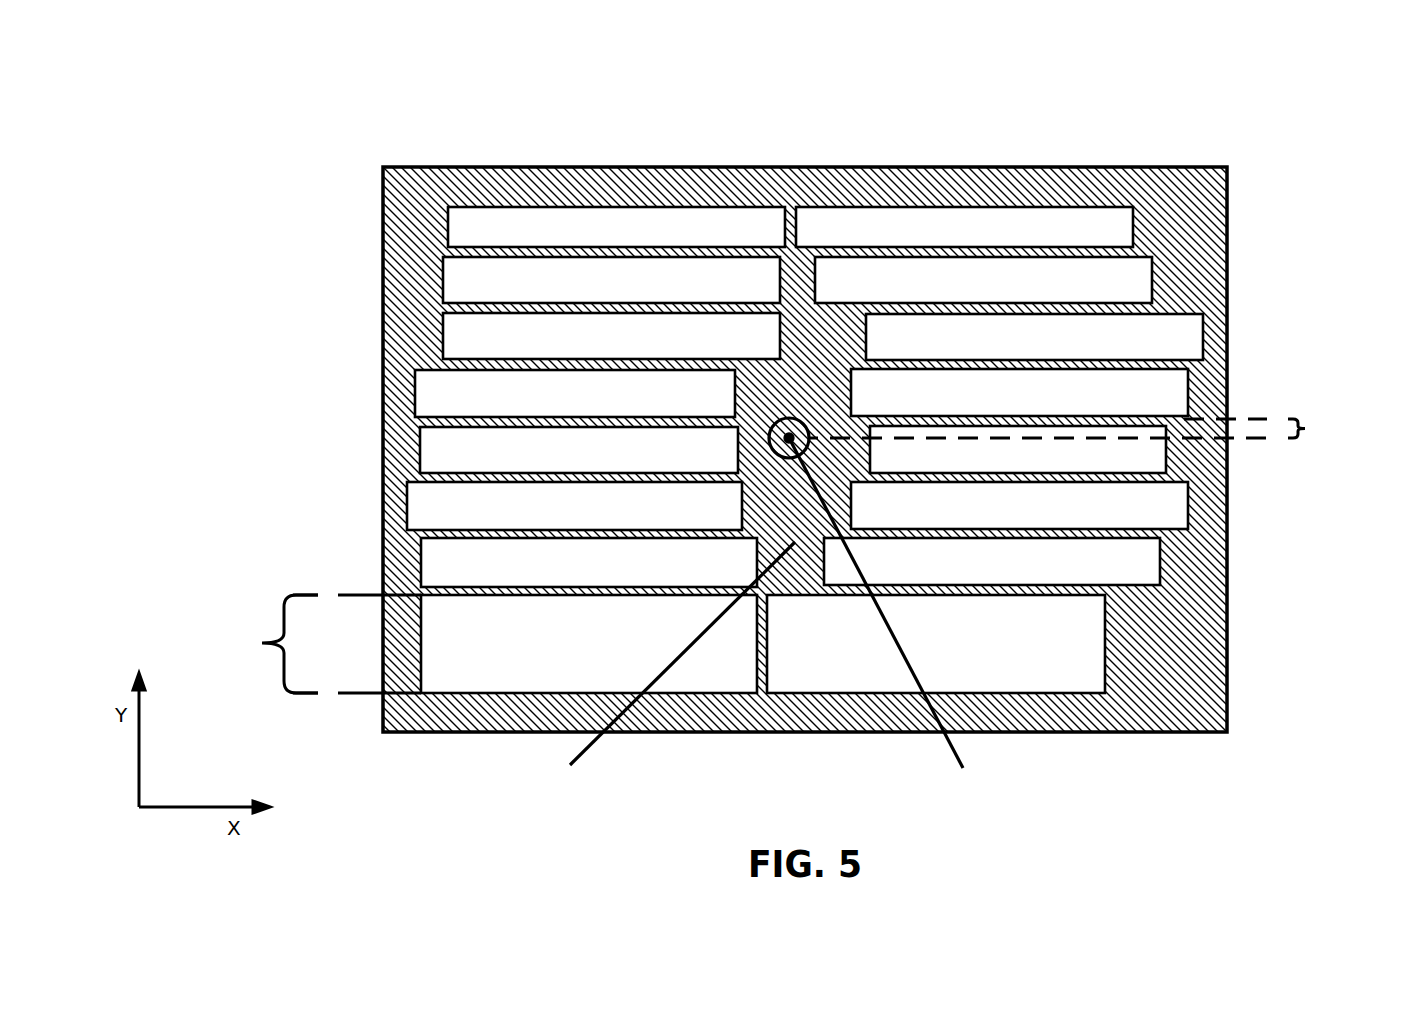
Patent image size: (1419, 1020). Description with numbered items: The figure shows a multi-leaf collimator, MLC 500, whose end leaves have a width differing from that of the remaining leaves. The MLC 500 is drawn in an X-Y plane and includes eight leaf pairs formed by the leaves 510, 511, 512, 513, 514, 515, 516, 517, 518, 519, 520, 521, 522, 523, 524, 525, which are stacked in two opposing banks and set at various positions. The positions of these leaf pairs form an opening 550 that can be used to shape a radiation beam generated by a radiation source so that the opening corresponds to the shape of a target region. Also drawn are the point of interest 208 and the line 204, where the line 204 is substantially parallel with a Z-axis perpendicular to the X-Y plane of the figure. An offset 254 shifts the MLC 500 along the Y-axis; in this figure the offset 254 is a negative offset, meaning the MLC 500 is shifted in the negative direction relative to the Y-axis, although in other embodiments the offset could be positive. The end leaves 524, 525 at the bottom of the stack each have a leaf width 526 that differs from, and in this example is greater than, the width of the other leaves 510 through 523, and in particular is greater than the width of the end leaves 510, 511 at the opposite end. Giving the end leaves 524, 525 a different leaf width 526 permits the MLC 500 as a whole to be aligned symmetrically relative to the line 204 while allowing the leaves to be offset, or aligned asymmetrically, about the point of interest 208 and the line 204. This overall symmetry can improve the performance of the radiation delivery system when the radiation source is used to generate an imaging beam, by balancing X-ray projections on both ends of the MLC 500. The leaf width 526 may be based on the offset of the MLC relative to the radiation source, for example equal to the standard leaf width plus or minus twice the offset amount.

The MLC 500 is at (260, 77).
The line 204 is at (789, 438).
The point of interest 208 is at (893, 619).
The opening 550 is at (657, 662).
The leaf 510 is at (477, 222).
The leaf 511 is at (1113, 224).
The leaf 512 is at (477, 280).
The leaf 513 is at (1133, 281).
The leaf 514 is at (477, 337).
The leaf 515 is at (1178, 337).
The leaf 516 is at (448, 393).
The leaf 517 is at (1170, 393).
The leaf 518 is at (448, 450).
The leaf 519 is at (1150, 462).
The leaf 520 is at (440, 505).
The leaf 521 is at (1165, 507).
The leaf 522 is at (448, 562).
The leaf 523 is at (1137, 567).
The end leaf 524 is at (497, 664).
The end leaf 525 is at (1075, 655).
The leaf width 526 is at (302, 644).
The offset 254 is at (1092, 430).